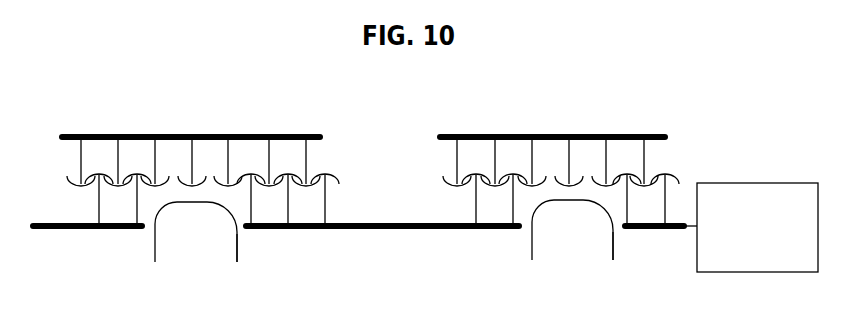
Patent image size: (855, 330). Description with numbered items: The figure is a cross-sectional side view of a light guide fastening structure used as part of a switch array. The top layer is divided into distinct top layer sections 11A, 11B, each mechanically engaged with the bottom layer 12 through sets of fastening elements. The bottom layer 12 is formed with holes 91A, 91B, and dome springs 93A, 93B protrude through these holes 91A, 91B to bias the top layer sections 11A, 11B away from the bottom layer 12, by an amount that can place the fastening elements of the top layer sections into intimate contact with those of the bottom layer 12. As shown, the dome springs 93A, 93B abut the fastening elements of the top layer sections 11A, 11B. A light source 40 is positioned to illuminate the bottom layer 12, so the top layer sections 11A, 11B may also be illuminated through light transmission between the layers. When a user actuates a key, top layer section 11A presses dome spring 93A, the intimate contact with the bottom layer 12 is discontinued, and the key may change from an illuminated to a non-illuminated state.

The top layer section 11A is at (73, 135).
The top layer section 11B is at (448, 134).
The bottom layer 12 is at (62, 229).
The dome spring 93A is at (155, 243).
The dome spring 93B is at (530, 252).
The hole 91A is at (250, 237).
The hole 91B is at (624, 240).
The light source 40 is at (757, 227).